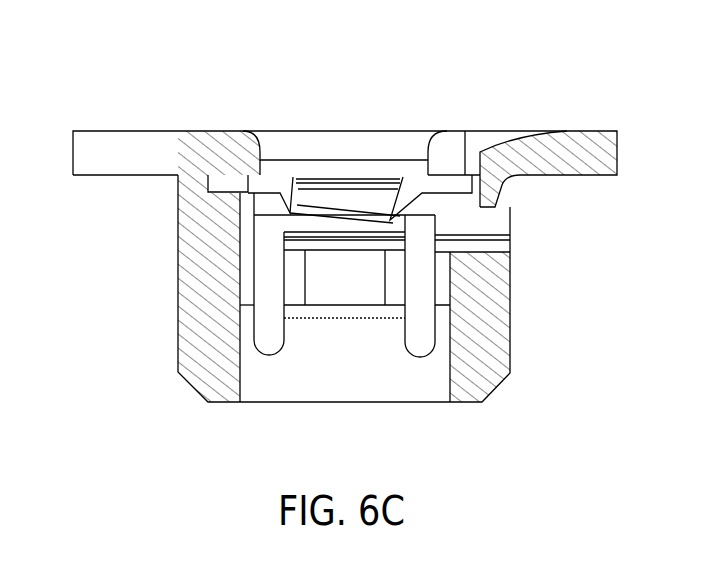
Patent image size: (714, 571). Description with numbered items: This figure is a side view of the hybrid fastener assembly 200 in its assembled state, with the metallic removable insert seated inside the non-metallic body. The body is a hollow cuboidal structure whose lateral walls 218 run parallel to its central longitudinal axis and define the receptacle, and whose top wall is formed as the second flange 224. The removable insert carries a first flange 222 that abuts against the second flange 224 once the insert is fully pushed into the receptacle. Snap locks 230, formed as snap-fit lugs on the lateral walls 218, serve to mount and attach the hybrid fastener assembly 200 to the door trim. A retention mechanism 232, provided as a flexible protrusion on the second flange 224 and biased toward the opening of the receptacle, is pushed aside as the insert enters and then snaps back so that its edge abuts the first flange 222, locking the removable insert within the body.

The hybrid fastener assembly 200 is at (398, 100).
The lateral walls 218 is at (213, 343).
The first flange 222 is at (275, 183).
The second flange 224 is at (183, 142).
The snap locks 230 is at (358, 292).
The retention mechanism 232 is at (547, 162).